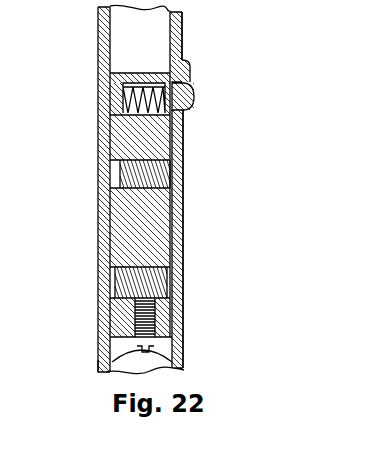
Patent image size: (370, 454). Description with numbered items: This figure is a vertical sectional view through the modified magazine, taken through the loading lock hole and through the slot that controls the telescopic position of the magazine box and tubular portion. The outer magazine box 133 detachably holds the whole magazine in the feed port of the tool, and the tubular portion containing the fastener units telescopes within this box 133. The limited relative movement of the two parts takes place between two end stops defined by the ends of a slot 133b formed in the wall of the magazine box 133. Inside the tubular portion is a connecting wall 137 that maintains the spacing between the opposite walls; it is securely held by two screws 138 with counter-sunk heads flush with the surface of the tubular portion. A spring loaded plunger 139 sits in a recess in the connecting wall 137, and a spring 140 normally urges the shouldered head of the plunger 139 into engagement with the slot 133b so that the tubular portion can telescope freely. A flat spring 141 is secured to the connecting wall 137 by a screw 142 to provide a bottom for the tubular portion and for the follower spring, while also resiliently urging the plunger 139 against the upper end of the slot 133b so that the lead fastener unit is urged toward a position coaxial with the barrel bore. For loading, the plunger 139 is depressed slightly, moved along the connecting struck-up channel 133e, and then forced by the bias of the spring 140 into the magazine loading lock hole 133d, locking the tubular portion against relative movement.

The outer magazine box 133 is at (184, 241).
The slot 133b is at (184, 152).
The magazine loading lock hole 133d is at (184, 60).
The connecting struck-up channel 133e is at (190, 85).
The connecting wall 137 is at (163, 217).
The screw 138 is at (120, 175).
The spring loaded plunger 139 is at (196, 100).
The spring 140 is at (112, 104).
The flat spring 141 is at (183, 352).
The screw 142 is at (104, 367).